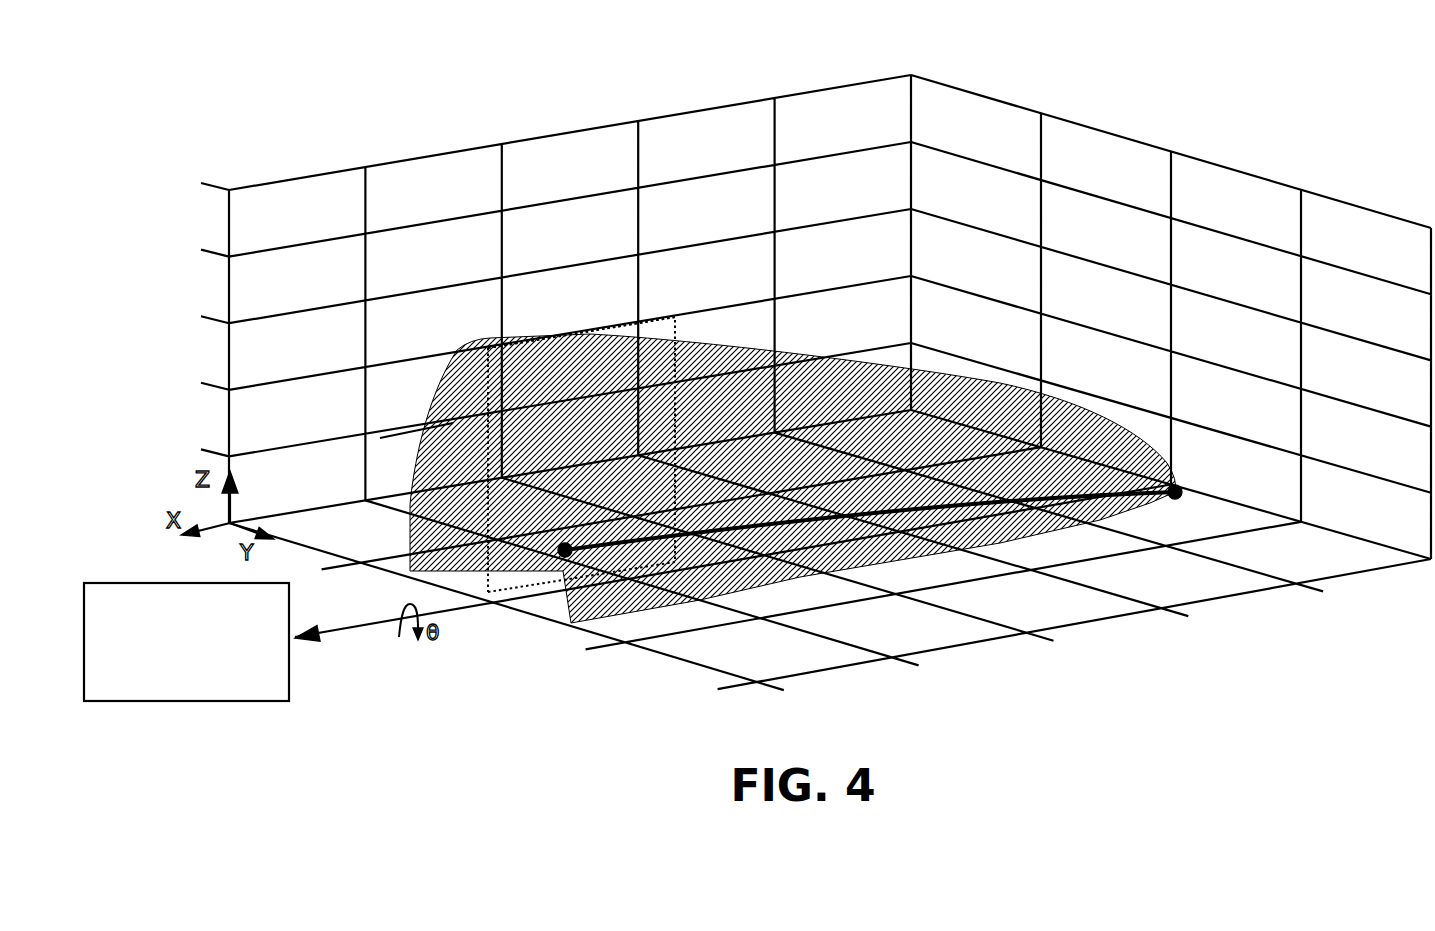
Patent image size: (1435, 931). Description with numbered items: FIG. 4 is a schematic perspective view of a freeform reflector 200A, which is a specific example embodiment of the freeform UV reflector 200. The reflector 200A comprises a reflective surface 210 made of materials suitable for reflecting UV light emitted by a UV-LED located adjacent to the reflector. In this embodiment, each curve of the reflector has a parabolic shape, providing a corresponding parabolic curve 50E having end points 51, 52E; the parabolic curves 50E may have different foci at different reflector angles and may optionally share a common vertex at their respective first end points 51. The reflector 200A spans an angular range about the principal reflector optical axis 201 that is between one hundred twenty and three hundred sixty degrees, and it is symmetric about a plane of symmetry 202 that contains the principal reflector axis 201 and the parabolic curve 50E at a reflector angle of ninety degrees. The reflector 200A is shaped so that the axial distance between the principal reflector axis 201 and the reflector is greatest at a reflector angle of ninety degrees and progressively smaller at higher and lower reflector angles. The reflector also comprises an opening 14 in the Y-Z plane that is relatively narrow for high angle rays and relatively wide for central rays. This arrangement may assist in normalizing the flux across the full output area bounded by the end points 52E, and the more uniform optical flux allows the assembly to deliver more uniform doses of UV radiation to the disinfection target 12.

The disinfection target 12 is at (193, 702).
The opening 14 is at (448, 527).
The first end point 51 is at (1183, 492).
The parabolic curve 50E is at (850, 517).
The end point 52E is at (568, 556).
The freeform UV reflector 200 is at (514, 350).
The freeform reflector 200A is at (485, 338).
The principal reflector optical axis 201 is at (369, 623).
The plane of symmetry 202 is at (647, 331).
The reflective surface 210 is at (380, 438).